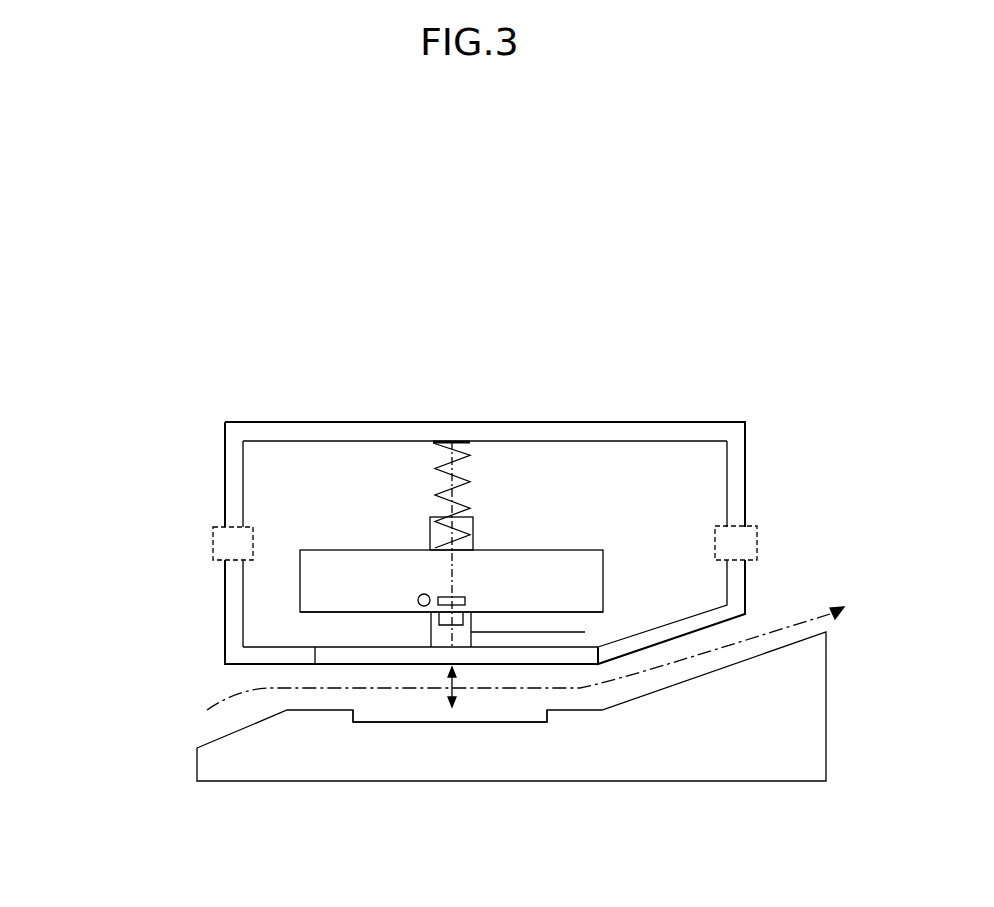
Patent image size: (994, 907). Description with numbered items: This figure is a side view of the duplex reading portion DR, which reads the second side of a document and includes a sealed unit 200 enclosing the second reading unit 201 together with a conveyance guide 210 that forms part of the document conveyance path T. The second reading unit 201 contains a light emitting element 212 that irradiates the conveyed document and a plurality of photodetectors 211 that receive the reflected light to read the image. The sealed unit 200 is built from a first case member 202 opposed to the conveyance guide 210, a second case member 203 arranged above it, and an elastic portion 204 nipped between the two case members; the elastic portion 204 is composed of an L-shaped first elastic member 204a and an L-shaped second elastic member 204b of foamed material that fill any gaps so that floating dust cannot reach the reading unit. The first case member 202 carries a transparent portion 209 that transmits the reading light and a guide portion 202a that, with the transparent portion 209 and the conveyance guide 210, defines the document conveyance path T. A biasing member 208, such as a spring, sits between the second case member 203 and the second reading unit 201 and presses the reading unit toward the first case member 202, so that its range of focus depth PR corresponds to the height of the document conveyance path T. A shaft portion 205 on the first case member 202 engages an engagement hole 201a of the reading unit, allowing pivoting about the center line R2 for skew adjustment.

The sealed unit 200 is at (583, 418).
The second reading unit 201 is at (547, 550).
The engagement hole 201a is at (508, 613).
The first case member 202 is at (223, 586).
The guide portion 202a is at (263, 666).
The second case member 203 is at (342, 420).
The elastic portion 204 is at (770, 507).
The first elastic member 204a is at (212, 542).
The second elastic member 204b is at (758, 544).
The shaft portion 205 is at (585, 632).
The biasing member 208 is at (470, 477).
The transparent portion 209 is at (327, 647).
The conveyance guide 210 is at (323, 706).
The photodetectors 211 is at (465, 600).
The light emitting element 212 is at (418, 599).
The center line R2 is at (448, 583).
The range of focus depth PR is at (455, 688).
The document conveyance path T is at (249, 722).
The duplex reading portion DR is at (197, 352).